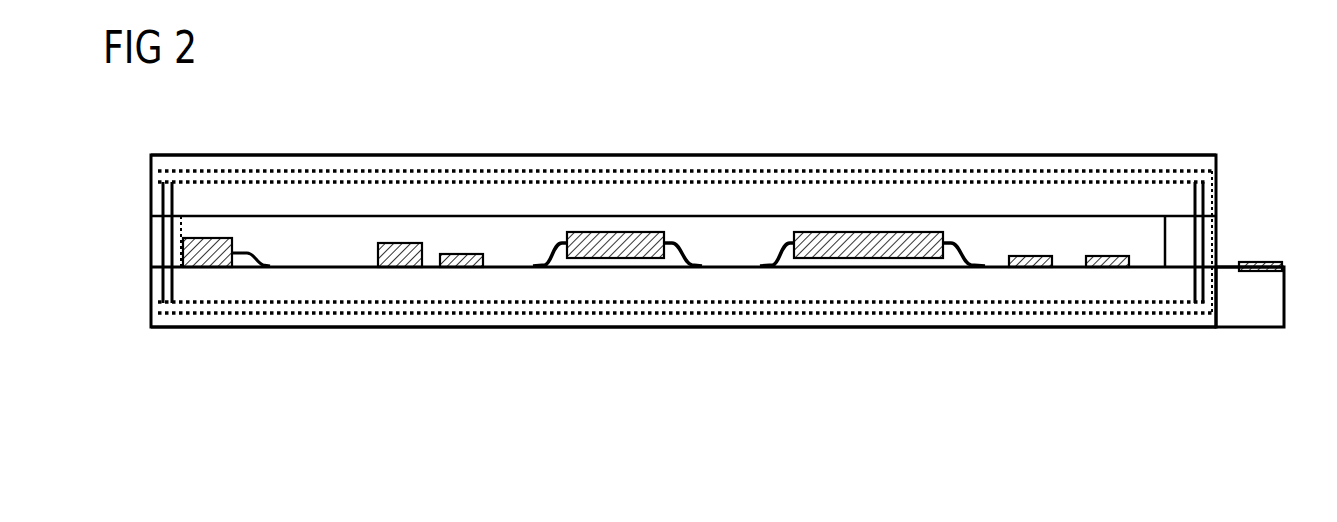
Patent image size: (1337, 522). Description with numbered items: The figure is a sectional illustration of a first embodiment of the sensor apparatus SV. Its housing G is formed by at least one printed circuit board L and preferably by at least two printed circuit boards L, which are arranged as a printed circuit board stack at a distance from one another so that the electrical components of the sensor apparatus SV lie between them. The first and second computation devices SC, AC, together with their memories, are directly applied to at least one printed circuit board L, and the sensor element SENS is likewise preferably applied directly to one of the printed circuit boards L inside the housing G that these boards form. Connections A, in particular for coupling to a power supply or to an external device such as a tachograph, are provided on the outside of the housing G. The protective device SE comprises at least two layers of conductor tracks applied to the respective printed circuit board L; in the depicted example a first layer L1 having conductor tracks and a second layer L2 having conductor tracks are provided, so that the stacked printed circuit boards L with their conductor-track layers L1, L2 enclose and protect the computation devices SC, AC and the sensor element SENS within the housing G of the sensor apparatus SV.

The sensor apparatus SV is at (1245, 160).
The printed circuit board L is at (1153, 170).
The first layer L1 is at (1078, 182).
The second layer L2 is at (1026, 171).
The protective device SE is at (333, 152).
The sensor element SENS is at (207, 240).
The first computation device SC is at (612, 242).
The second computation device AC is at (866, 242).
The housing G is at (158, 202).
The connections A is at (1262, 262).